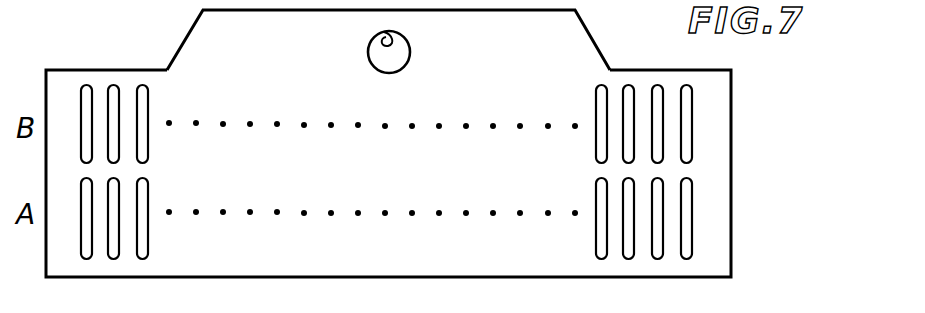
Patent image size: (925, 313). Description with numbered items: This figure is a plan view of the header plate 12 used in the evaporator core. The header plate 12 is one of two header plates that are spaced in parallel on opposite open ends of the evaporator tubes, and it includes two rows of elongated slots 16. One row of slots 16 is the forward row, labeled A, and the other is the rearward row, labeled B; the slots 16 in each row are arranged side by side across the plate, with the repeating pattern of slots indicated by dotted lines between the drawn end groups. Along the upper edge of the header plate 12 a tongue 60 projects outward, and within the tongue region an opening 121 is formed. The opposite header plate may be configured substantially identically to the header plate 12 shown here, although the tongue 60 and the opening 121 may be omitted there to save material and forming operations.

The header plate 12 is at (732, 237).
The elongated slots 16 is at (90, 86).
The tongue 60 is at (598, 26).
The opening 121 is at (398, 38).